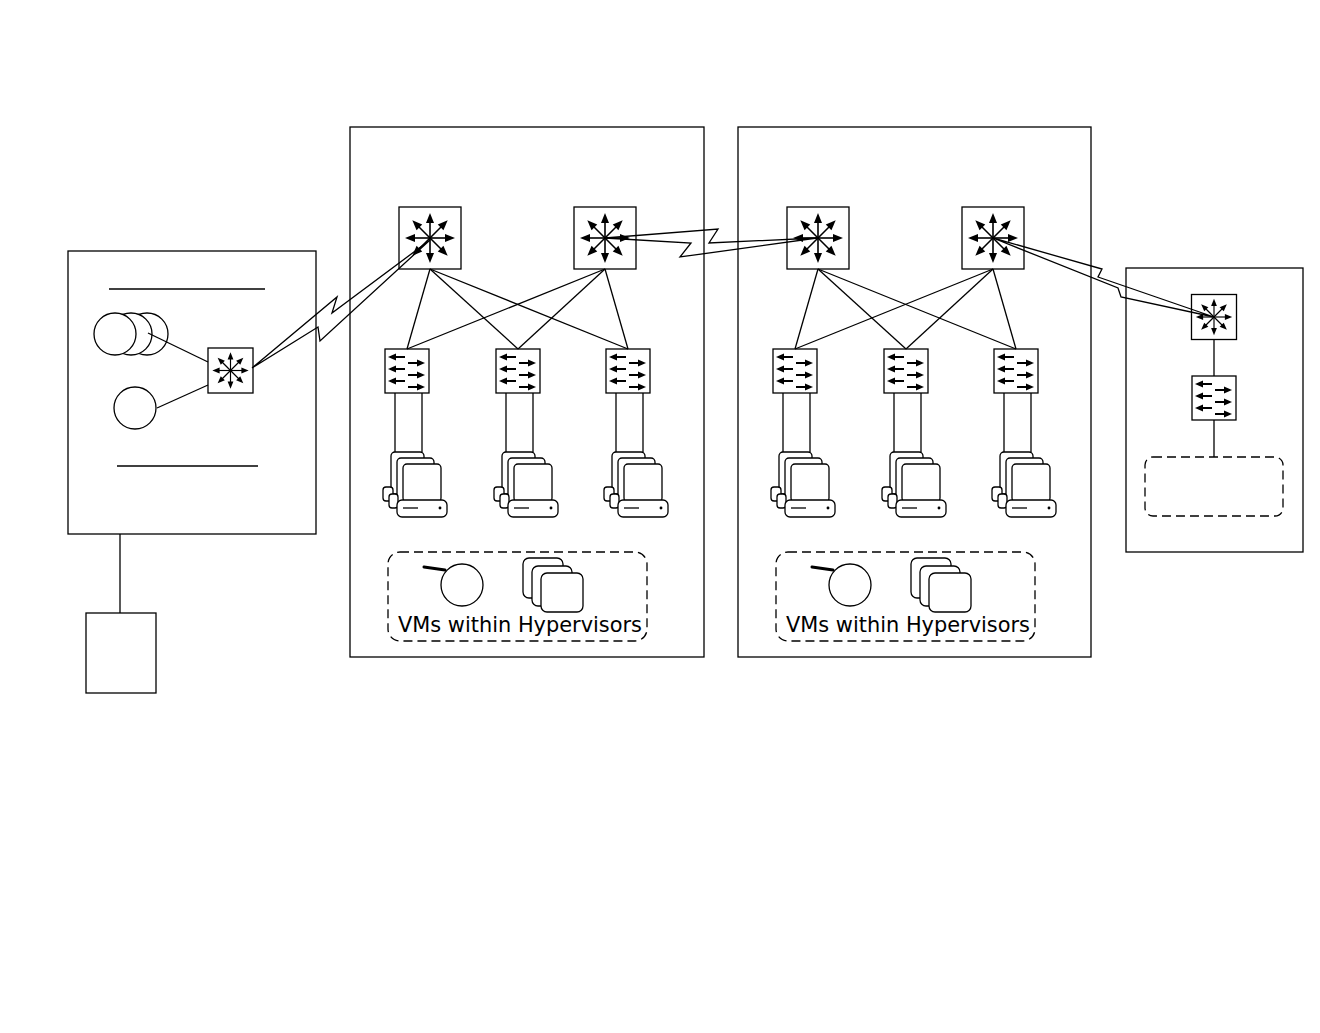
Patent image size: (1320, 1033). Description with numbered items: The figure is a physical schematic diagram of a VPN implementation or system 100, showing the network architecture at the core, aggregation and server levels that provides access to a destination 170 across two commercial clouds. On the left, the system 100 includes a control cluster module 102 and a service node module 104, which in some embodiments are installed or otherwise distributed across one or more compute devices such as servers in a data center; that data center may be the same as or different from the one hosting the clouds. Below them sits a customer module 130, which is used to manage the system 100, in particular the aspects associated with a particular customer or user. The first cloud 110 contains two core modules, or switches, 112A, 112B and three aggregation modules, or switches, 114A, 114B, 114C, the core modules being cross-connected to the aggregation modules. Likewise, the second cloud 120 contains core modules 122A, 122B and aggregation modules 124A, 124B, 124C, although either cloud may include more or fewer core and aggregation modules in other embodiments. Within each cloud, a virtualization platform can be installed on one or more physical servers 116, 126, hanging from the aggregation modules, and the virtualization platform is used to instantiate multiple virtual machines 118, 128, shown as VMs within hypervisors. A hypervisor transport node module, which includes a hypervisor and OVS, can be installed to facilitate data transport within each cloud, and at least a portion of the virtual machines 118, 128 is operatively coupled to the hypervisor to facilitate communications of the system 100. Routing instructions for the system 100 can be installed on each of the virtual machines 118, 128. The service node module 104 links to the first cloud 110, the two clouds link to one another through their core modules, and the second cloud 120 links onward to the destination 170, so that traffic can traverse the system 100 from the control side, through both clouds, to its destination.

The VPN implementation or system 100 is at (312, 70).
The control cluster module 102 is at (189, 258).
The service node module 104 is at (242, 517).
The first cloud 110 is at (537, 159).
The core module 112A is at (430, 226).
The core module 112B is at (605, 226).
The aggregation module 114A is at (436, 368).
The aggregation module 114B is at (547, 368).
The aggregation module 114C is at (649, 357).
The physical servers 116 is at (538, 455).
The virtual machines 118 is at (517, 596).
The second cloud 120 is at (914, 392).
The core module 122A is at (818, 226).
The core module 122B is at (993, 226).
The aggregation module 124A is at (824, 368).
The aggregation module 124B is at (935, 368).
The aggregation module 124C is at (1037, 357).
The physical servers 126 is at (926, 455).
The virtual machines 128 is at (905, 596).
The customer module 130 is at (121, 613).
The destination 170 is at (1214, 410).